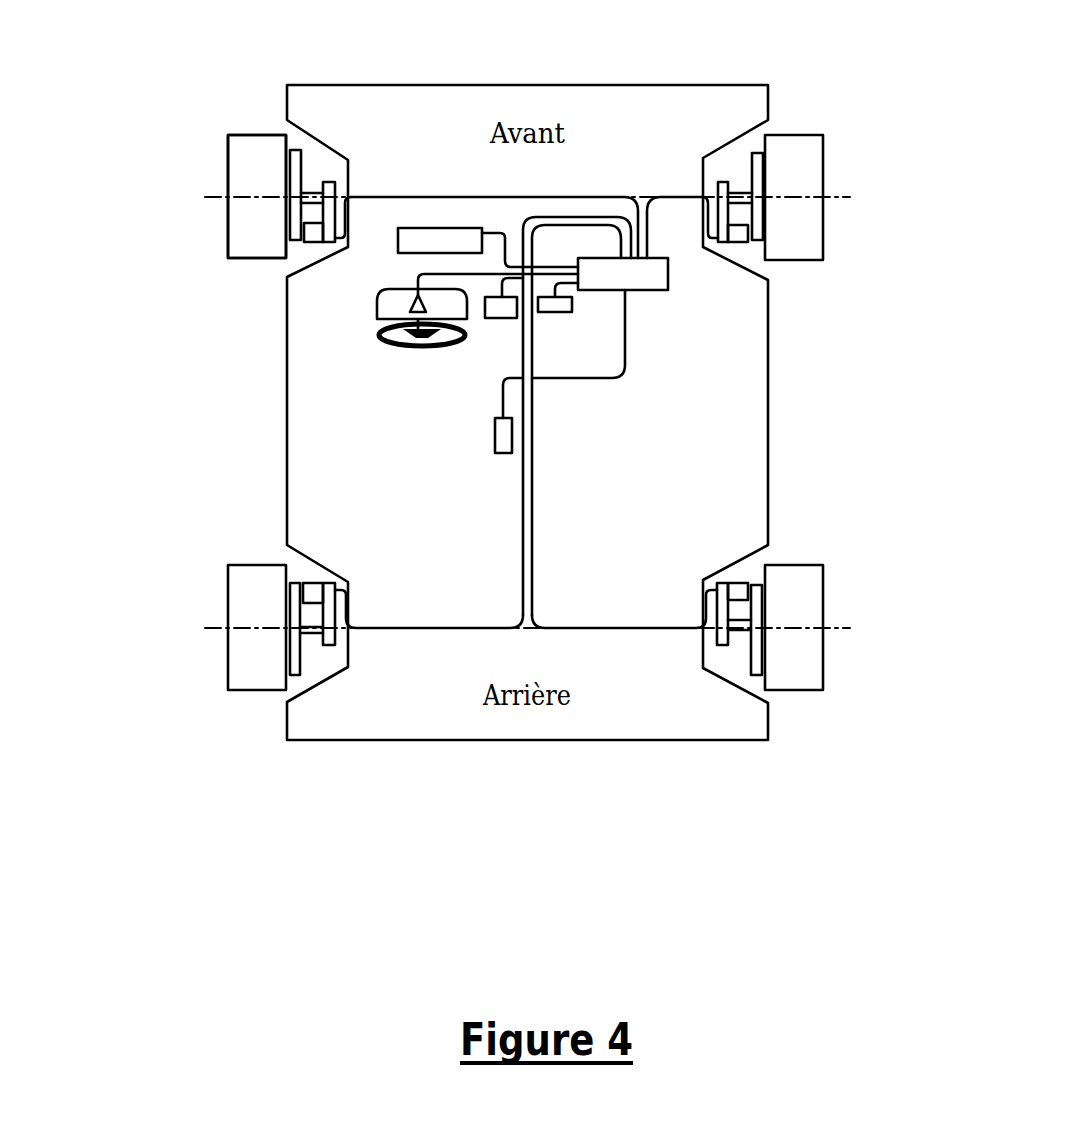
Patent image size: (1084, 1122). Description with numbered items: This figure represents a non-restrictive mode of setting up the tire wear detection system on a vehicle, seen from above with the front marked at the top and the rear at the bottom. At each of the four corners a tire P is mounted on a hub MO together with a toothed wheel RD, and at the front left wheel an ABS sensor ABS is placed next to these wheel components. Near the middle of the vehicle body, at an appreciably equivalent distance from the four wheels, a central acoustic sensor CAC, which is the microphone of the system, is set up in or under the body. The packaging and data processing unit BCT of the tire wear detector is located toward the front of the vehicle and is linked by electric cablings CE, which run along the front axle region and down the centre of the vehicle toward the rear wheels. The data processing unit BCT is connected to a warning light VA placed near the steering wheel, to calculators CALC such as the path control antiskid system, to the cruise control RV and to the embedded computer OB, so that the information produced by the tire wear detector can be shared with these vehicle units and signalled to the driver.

The toothed wheel RD is at (255, 155).
The ABS sensor ABS is at (287, 226).
The hub MO is at (302, 172).
The tire P is at (185, 253).
The calculators such as path control Antiskid system CALC is at (365, 255).
The warning light VA is at (367, 310).
The Central acoustic sensor CAC is at (443, 440).
The electric cablings CE is at (665, 195).
The packaging and data processing unit of the tire wear detector BCT is at (650, 292).
The cruise control RV is at (533, 315).
The embedded computer OB is at (475, 317).